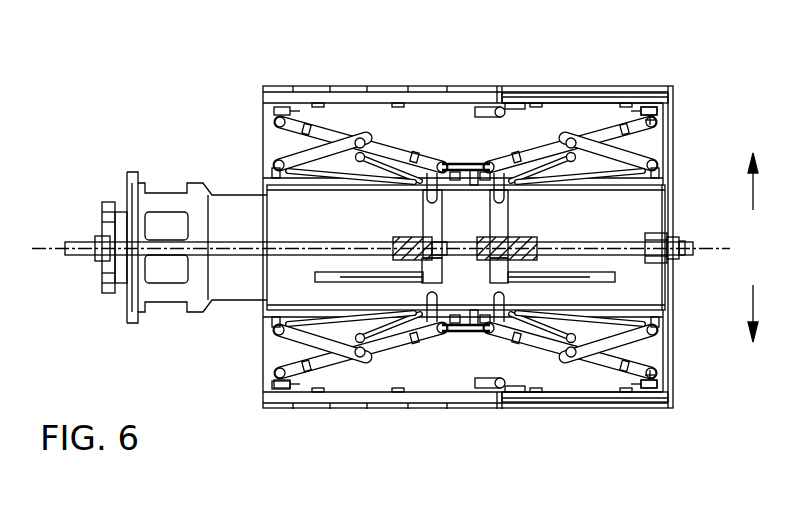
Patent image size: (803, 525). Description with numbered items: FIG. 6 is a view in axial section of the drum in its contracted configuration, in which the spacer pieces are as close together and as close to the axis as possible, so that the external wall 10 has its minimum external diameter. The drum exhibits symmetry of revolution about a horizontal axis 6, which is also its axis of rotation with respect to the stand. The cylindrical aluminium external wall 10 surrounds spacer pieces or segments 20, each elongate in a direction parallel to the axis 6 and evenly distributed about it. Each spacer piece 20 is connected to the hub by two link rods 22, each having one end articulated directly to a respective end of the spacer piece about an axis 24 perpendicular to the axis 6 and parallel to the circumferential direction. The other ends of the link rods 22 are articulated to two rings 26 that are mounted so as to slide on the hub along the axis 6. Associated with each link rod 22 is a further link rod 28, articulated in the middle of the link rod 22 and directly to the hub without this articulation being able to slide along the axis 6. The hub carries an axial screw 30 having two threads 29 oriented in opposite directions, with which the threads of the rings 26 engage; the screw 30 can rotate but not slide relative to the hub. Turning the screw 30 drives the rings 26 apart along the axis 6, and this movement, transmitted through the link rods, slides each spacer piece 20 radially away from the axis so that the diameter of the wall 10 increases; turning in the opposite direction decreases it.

The horizontal axis 6 is at (48, 249).
The external wall 10 is at (357, 412).
The spacer piece 20 is at (464, 98).
The link rod 22 is at (390, 145).
The articulation axis 24 is at (660, 112).
The ring 26 is at (442, 167).
The link rod 28 is at (275, 362).
The thread 29 is at (420, 240).
The axial screw 30 is at (600, 240).